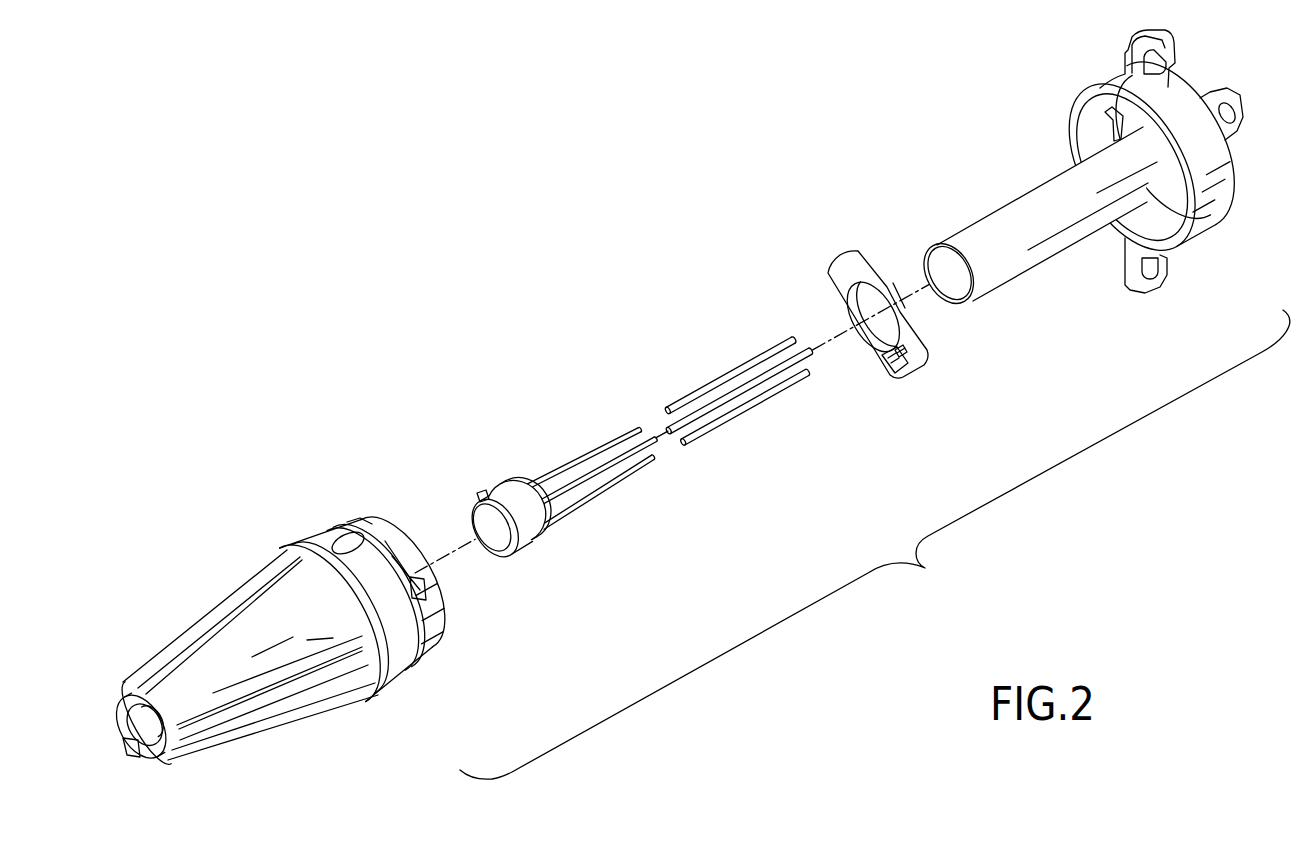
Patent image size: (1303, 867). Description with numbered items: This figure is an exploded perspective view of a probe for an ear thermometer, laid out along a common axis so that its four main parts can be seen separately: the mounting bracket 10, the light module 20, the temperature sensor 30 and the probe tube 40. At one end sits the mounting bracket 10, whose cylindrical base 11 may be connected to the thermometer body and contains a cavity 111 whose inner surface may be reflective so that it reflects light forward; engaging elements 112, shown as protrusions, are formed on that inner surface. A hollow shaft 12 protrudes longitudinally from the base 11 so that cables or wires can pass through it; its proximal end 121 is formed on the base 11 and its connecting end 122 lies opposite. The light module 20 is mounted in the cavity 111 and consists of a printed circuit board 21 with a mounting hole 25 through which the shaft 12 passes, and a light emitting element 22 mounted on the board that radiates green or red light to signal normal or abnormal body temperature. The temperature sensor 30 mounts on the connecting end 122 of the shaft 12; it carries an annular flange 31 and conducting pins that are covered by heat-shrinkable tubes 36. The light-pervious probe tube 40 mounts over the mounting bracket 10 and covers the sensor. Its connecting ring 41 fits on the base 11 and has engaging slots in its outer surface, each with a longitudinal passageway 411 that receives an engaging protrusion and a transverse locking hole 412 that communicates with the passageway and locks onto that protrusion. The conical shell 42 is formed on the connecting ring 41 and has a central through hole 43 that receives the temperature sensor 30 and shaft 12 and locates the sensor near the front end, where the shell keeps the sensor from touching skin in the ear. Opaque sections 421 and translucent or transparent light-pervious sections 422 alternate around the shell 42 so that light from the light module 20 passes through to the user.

The mounting bracket 10 is at (1083, 184).
The base 11 is at (1140, 184).
The cavity 111 is at (1080, 133).
The engaging elements 112 is at (1160, 295).
The shaft 12 is at (1069, 180).
The proximal end 121 is at (1150, 148).
The connecting end 122 is at (952, 248).
The light module 20 is at (869, 289).
The printed circuit board 21 is at (842, 265).
The light emitting element 22 is at (891, 378).
The mounting hole 25 is at (884, 335).
The temperature sensor 30 is at (566, 480).
The annular flange 31 is at (517, 483).
The heat-shrinkable tubes 36 is at (753, 365).
The probe tube 40 is at (284, 616).
The connecting ring 41 is at (399, 591).
The longitudinal passageway 411 is at (382, 535).
The transverse locking hole 412 is at (424, 588).
The shell 42 is at (231, 660).
The opaque sections 421 is at (280, 705).
The light-pervious sections 422 is at (163, 685).
The through hole 43 is at (147, 728).